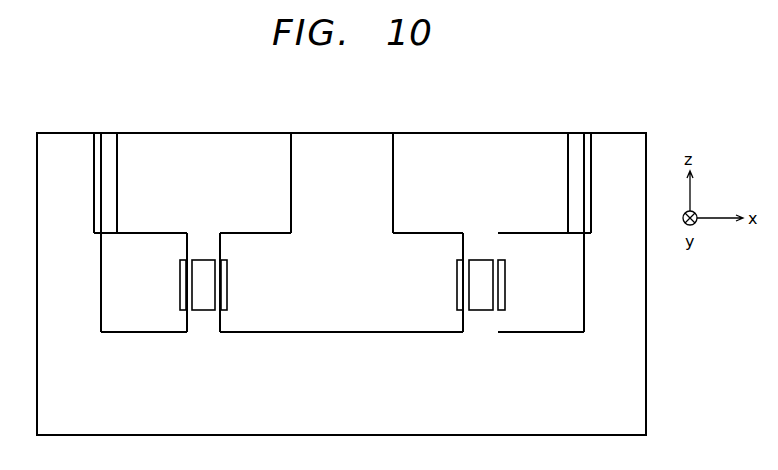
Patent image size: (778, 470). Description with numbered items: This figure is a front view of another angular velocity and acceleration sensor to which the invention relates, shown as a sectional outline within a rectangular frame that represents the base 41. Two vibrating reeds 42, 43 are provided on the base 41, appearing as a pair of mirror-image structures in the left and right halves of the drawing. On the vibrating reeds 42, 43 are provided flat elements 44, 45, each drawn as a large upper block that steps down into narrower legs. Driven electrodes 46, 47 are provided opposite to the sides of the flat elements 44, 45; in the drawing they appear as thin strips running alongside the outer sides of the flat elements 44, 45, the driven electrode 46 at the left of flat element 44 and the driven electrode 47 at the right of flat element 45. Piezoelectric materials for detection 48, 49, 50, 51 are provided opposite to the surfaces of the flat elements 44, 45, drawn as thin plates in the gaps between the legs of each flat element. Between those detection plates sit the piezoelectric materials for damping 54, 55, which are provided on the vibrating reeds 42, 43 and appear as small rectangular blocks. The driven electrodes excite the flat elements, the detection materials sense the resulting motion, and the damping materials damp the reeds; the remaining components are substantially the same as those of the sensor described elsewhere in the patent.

The base 41 is at (628, 132).
The vibrating reed 42 is at (217, 322).
The vibrating reed 43 is at (470, 320).
The flat element 44 is at (193, 148).
The flat element 45 is at (482, 144).
The driven electrode 46 is at (93, 177).
The driven electrode 47 is at (598, 132).
The piezoelectric material for detection 48 is at (180, 284).
The piezoelectric material for detection 49 is at (505, 272).
The piezoelectric material for detection 50 is at (228, 273).
The piezoelectric material for detection 51 is at (457, 272).
The piezoelectric material for damping 54 is at (205, 307).
The piezoelectric material for damping 55 is at (481, 306).